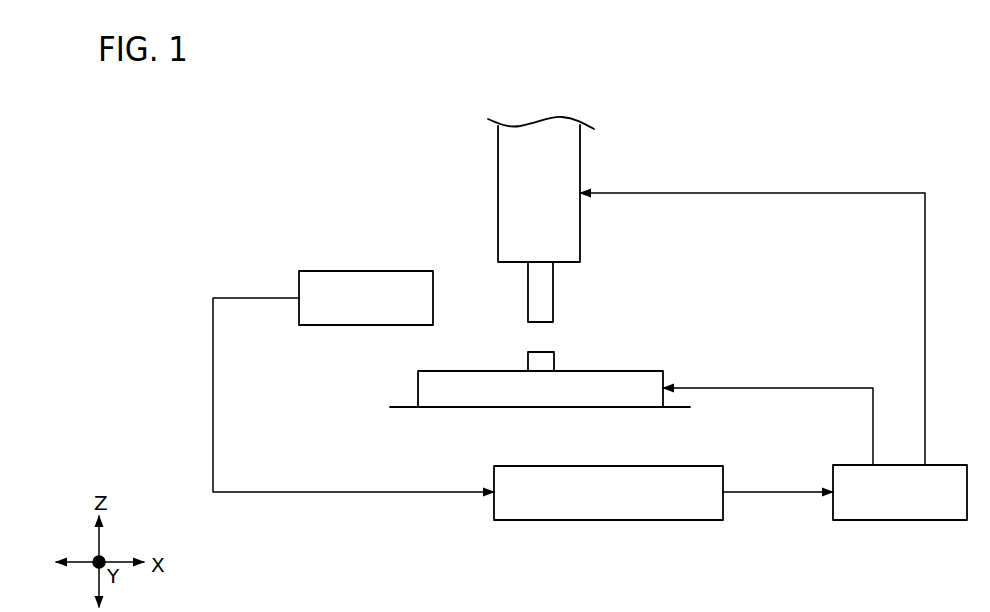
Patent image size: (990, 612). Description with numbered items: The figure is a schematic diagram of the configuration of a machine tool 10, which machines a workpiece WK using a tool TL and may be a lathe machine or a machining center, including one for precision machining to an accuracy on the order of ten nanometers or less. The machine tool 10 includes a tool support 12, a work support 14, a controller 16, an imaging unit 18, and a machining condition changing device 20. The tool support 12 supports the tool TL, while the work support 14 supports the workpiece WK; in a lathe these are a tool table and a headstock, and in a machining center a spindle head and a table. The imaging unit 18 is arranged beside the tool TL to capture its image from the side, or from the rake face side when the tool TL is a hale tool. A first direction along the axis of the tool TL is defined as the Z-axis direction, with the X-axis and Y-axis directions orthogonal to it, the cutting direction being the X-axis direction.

The machine tool 10 is at (159, 163).
The tool support 12 is at (498, 157).
The work support 14 is at (418, 388).
The controller 16 is at (900, 520).
The imaging unit 18 is at (352, 271).
The machining condition changing device 20 is at (640, 520).
The tool TL is at (553, 296).
The workpiece WK is at (554, 352).